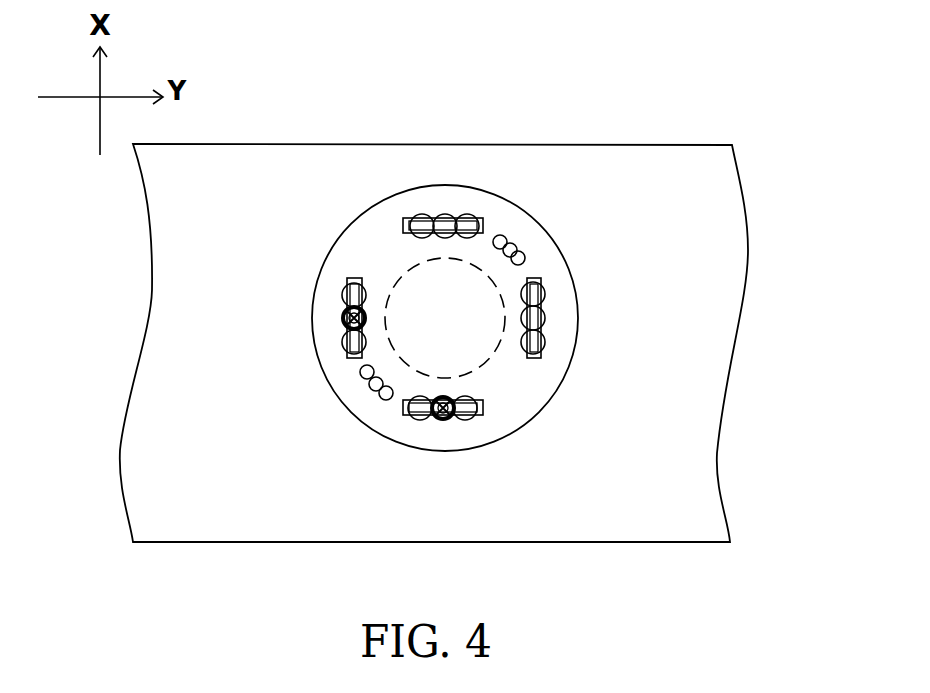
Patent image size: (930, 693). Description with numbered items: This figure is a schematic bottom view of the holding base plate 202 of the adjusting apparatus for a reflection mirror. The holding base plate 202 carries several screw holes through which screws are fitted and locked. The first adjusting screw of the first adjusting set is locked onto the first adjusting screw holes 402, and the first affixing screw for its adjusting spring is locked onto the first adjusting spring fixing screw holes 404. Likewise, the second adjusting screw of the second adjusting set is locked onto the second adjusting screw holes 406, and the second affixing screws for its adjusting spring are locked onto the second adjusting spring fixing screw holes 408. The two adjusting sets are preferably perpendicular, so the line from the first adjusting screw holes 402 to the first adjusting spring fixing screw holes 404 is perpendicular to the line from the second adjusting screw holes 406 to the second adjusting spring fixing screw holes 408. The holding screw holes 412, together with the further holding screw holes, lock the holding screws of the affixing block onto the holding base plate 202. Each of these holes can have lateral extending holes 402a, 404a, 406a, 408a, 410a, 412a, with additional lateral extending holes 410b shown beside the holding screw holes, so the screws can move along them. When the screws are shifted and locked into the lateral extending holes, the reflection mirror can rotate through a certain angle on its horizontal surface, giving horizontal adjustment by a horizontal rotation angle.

The holding base plate 202 is at (715, 273).
The first adjusting screw holes 402 is at (547, 323).
The lateral extending holes 402a is at (535, 292).
The first adjusting spring fixing screw holes 404 is at (345, 318).
The lateral extending holes 404a is at (346, 289).
The second adjusting screw holes 406 is at (437, 225).
The lateral extending holes 406a is at (472, 224).
The second adjusting spring fixing screw holes 408 is at (457, 415).
The lateral extending holes 408a is at (417, 415).
The lateral extending holes 410a is at (503, 240).
The second adjusting hole 410b is at (515, 250).
The holding screw holes 412 is at (378, 385).
The lateral extending holes 412a is at (368, 375).